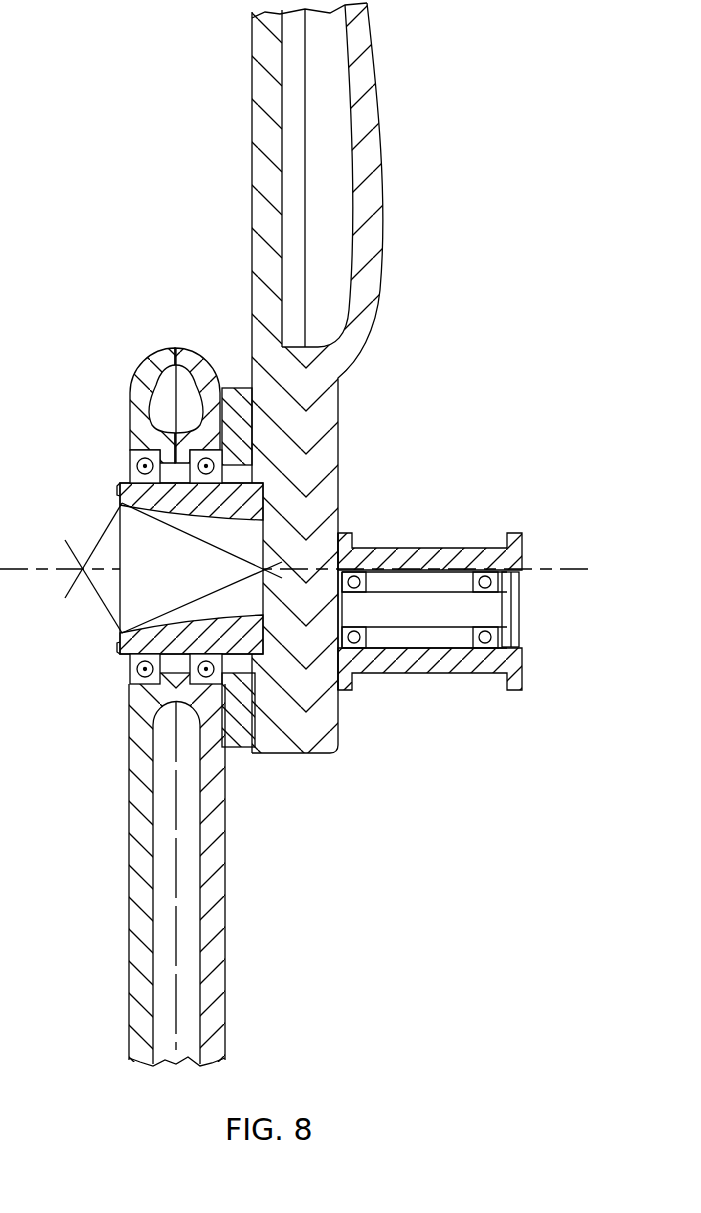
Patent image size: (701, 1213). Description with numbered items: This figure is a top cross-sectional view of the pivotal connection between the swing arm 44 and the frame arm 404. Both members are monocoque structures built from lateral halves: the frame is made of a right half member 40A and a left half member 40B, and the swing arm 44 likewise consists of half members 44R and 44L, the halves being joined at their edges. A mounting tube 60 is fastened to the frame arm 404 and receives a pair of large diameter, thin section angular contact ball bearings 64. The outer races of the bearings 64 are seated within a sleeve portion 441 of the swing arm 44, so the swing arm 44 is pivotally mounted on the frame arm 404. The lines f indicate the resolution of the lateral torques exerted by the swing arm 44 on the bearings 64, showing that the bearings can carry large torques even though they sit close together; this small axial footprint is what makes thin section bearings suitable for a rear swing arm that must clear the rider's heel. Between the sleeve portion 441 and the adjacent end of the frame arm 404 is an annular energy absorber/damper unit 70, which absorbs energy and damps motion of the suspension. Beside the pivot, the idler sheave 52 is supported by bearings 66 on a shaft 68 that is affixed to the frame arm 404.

The frame arm 404 is at (361, 378).
The right half member 40A is at (380, 100).
The left half member 40B is at (250, 130).
The annular energy absorber/damper unit 70 is at (228, 380).
The sleeve portion 441 is at (138, 366).
The angular contact ball bearings 64 is at (135, 463).
The mounting tube 60 is at (120, 650).
The lines f is at (107, 530).
The swing arm 44 is at (178, 869).
The left half member 44L is at (128, 893).
The right half member 44R is at (224, 850).
The idler sheave 52 is at (432, 547).
The bearings 66 is at (360, 565).
The shaft 68 is at (430, 617).